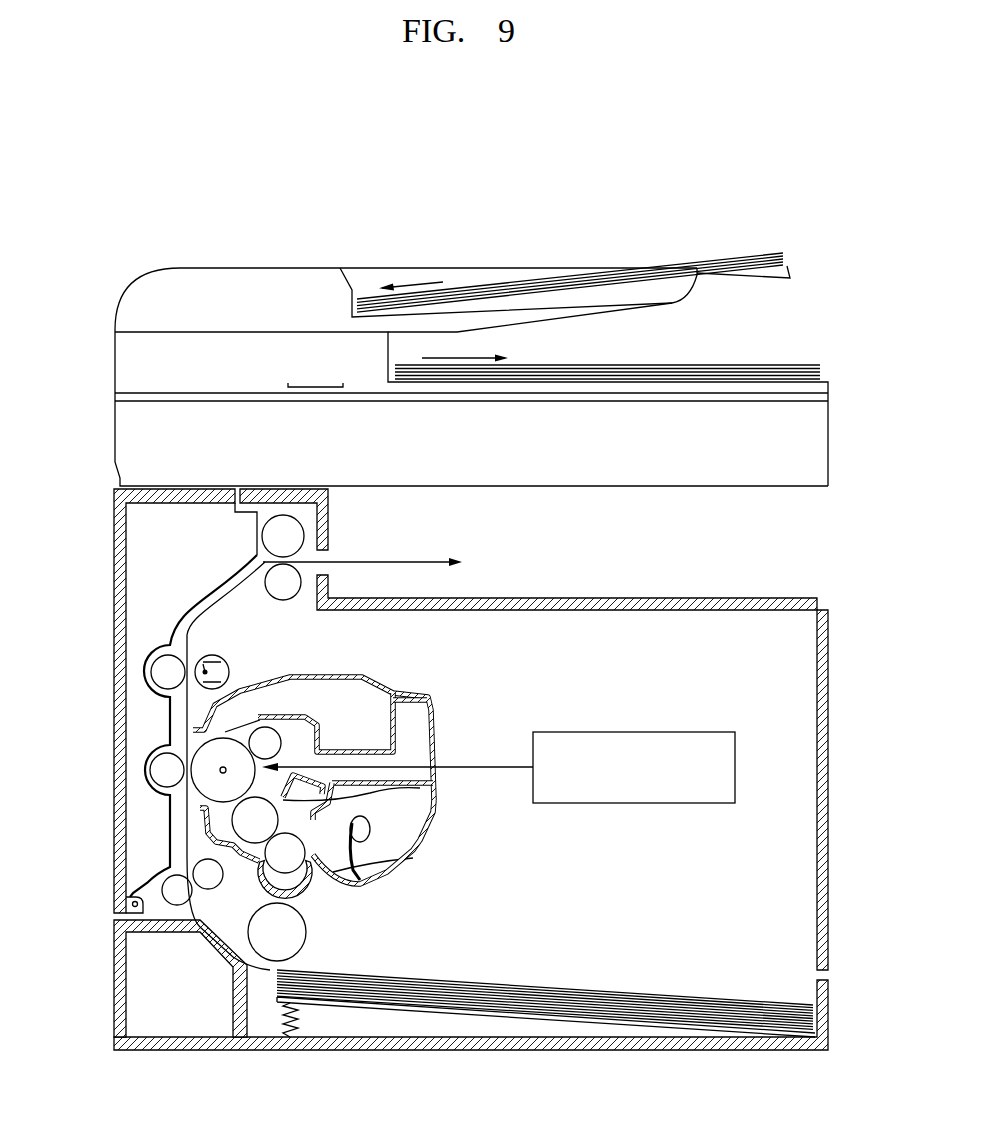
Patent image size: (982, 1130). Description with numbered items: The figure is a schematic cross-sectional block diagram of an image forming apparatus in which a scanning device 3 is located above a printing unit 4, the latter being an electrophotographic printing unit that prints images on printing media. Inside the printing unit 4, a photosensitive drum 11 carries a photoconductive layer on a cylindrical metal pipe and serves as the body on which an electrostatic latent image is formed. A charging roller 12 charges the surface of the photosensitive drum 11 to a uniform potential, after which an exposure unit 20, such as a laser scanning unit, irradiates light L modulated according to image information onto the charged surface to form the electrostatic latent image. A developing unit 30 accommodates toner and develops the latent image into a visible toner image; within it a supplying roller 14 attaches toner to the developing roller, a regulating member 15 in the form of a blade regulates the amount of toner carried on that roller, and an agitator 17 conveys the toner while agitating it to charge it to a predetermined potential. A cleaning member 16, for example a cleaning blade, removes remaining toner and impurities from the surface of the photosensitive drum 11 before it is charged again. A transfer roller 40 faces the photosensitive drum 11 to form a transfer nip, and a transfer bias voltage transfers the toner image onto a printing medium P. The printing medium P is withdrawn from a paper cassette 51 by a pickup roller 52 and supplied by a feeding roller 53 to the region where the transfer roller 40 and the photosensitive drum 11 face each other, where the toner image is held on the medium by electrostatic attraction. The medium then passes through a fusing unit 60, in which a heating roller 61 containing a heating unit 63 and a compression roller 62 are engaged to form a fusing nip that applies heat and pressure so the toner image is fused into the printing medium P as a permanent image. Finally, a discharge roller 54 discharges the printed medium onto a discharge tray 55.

The scanning device 3 is at (810, 346).
The printing unit 4 is at (786, 590).
The photosensitive drum 11 is at (193, 793).
The charging roller 12 is at (313, 716).
The supplying roller 14 is at (398, 877).
The regulating member 15 is at (420, 788).
The cleaning member 16 is at (252, 697).
The agitator 17 is at (371, 829).
The exposure unit 20 is at (498, 785).
The developing unit 30 is at (356, 853).
The transfer roller 40 is at (150, 768).
The paper cassette 51 is at (546, 1013).
The pickup roller 52 is at (273, 961).
The feeding roller 53 is at (209, 889).
The discharge roller 54 is at (304, 533).
The discharge tray 55 is at (543, 597).
The fusing unit 60 is at (156, 762).
The heating roller 61 is at (220, 659).
The compression roller 62 is at (151, 668).
The heating unit 63 is at (204, 670).
The light L is at (480, 765).
The printing medium P is at (528, 988).